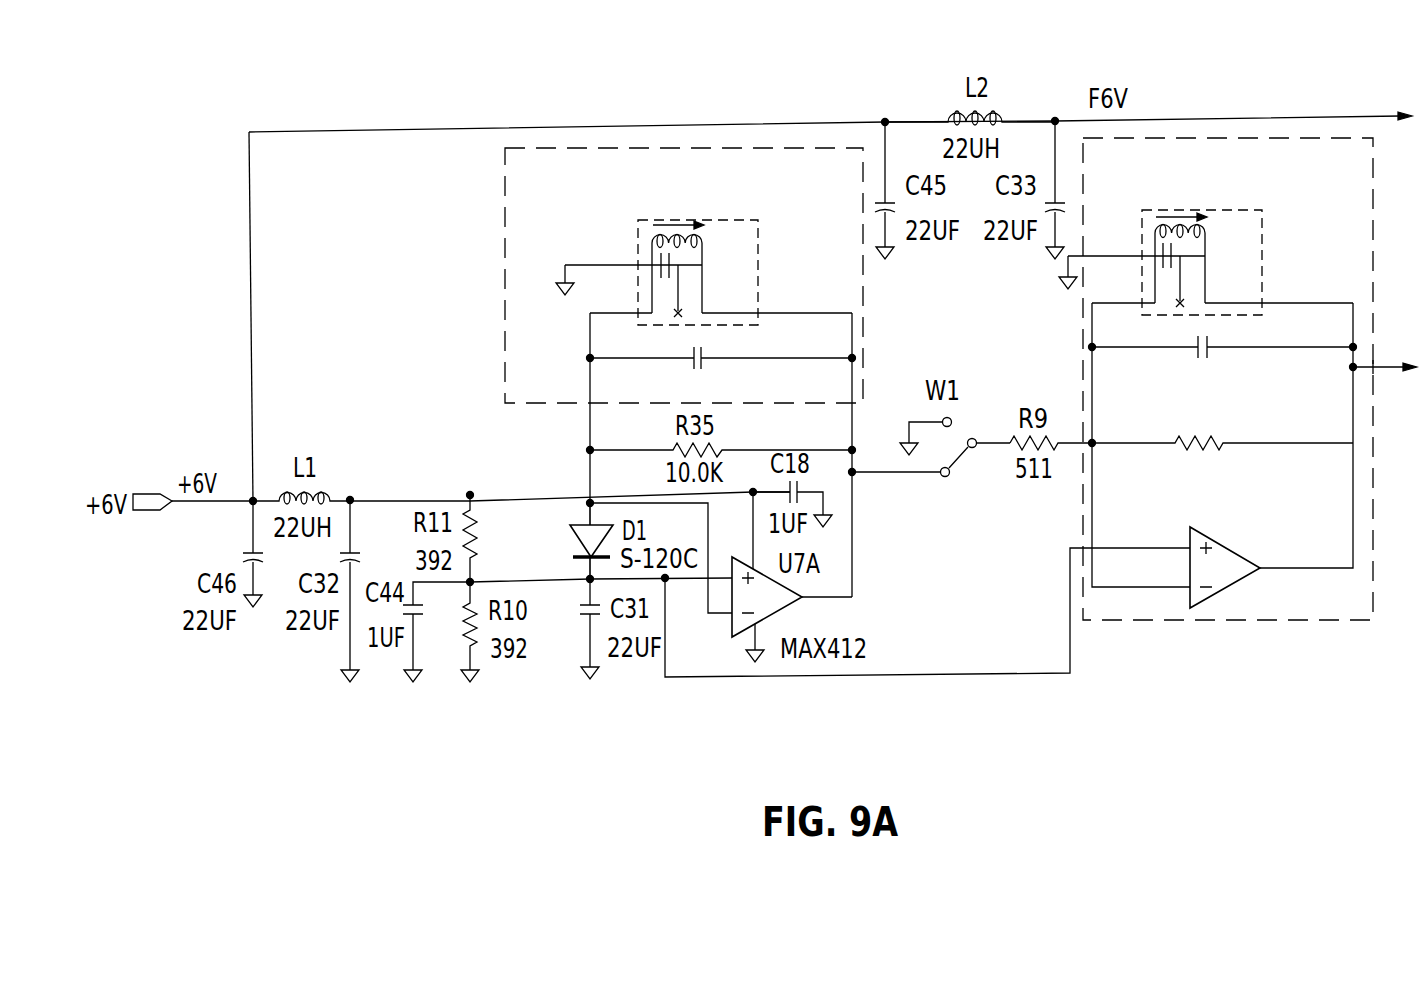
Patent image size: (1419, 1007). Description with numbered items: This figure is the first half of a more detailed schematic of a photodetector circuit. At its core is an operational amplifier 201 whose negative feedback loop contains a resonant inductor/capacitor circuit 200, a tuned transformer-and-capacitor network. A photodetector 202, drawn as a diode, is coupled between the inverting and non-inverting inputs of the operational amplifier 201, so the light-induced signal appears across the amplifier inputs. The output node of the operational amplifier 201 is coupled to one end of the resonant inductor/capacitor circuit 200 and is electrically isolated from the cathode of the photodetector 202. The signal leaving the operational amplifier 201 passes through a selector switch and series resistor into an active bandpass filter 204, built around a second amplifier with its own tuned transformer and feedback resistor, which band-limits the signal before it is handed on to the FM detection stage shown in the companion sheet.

The resonant inductor/capacitor circuit 200 is at (865, 299).
The operational amplifier 201 is at (806, 600).
The photodetector 202 is at (576, 540).
The active bandpass filter 204 is at (1357, 257).